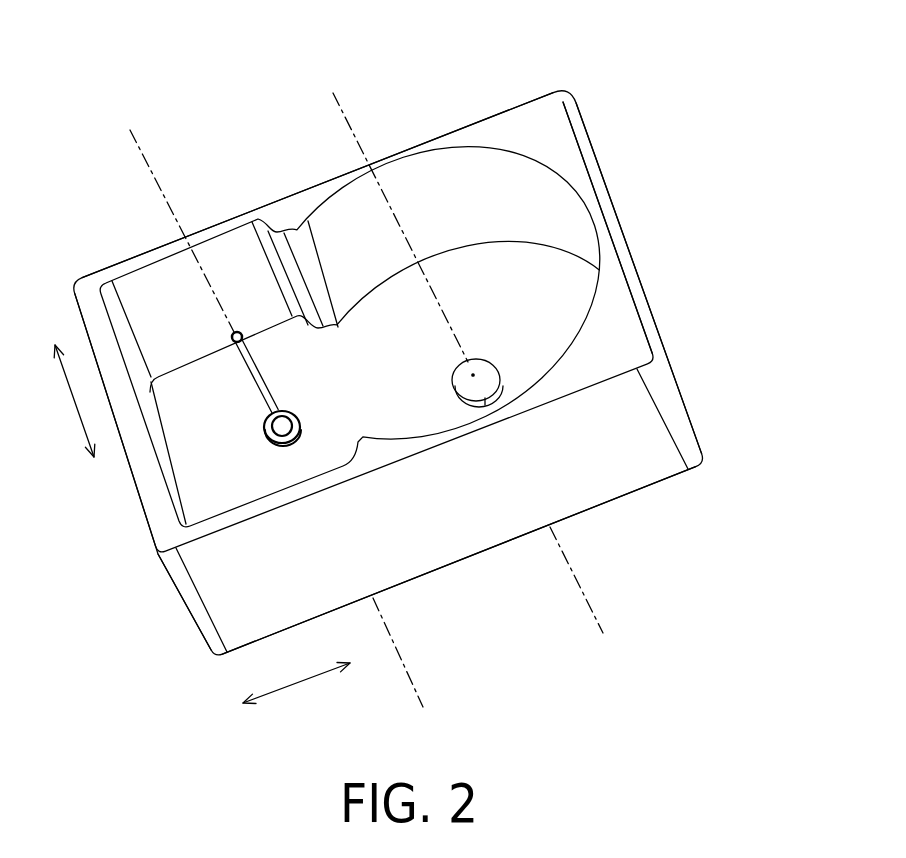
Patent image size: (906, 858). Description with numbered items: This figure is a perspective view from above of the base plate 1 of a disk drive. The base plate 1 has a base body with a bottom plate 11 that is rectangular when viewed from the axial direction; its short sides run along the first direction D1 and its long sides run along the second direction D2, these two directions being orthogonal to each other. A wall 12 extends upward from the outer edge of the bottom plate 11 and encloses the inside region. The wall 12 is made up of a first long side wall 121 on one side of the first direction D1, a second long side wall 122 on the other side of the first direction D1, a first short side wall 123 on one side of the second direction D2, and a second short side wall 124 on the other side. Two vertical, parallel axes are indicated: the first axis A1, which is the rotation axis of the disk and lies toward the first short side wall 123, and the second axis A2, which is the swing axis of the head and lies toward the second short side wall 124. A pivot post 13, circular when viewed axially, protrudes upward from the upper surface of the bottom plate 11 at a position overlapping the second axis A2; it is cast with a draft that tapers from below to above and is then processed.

The base plate 1 is at (619, 84).
The bottom plate 11 is at (541, 322).
The wall 12 is at (404, 327).
The first long side wall 121 is at (417, 143).
The second long side wall 122 is at (581, 474).
The first short side wall 123 is at (624, 279).
The second short side wall 124 is at (129, 474).
The pivot post 13 is at (233, 337).
The first axis A1 is at (458, 349).
The second axis A2 is at (269, 404).
The first direction D1 is at (67, 401).
The second direction D2 is at (296, 677).